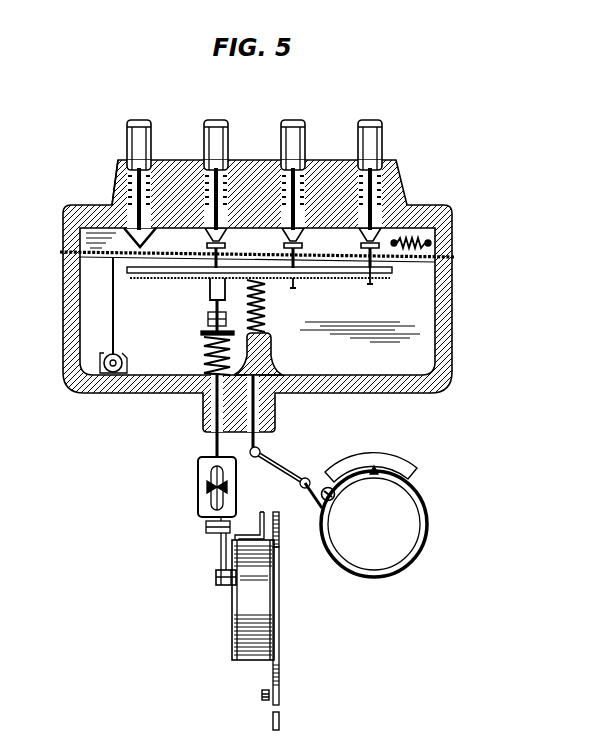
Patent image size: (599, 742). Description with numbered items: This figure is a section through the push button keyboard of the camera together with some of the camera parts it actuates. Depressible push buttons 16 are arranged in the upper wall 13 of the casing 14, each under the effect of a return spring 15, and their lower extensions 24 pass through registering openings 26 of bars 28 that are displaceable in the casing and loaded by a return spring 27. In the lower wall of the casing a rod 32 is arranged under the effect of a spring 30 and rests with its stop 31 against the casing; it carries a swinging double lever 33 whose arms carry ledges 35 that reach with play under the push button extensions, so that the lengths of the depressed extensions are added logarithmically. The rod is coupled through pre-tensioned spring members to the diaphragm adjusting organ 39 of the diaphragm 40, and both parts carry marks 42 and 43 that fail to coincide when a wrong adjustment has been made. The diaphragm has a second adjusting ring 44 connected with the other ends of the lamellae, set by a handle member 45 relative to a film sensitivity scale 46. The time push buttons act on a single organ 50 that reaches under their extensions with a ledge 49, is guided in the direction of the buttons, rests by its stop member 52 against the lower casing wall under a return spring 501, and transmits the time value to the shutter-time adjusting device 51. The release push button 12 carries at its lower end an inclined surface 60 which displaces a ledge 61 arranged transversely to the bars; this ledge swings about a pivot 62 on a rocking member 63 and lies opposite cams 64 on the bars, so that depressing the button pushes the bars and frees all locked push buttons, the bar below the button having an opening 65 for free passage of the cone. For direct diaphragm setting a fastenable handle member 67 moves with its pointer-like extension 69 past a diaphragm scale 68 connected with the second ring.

The push button 12 is at (127, 138).
The upper wall 13 is at (113, 203).
The casing 14 is at (440, 312).
The return spring 15 is at (126, 186).
The push button 16 is at (229, 141).
The extension 24 is at (210, 284).
The opening 26 is at (238, 249).
The return spring 27 is at (410, 240).
The bar 28 is at (440, 266).
The spring 30 is at (203, 344).
The stop 31 is at (210, 434).
The rod 32 is at (205, 358).
The swinging double lever 33 is at (207, 308).
The ledge 35 is at (347, 282).
The diaphragm adjusting organ 39 is at (220, 585).
The diaphragm 40 is at (235, 632).
The mark 42 is at (236, 490).
The mark 43 is at (205, 497).
The second adjusting ring 44 is at (280, 611).
The handle member 45 is at (262, 695).
The scale 46 is at (280, 722).
The ledge 49 is at (314, 279).
The organ 50 is at (275, 360).
The return spring 501 is at (268, 330).
The shutter-time adjusting device 51 is at (329, 486).
The stop member 52 is at (262, 450).
The inclined surface 60 is at (157, 240).
The ledge 61 is at (68, 232).
The pivot 62 is at (124, 362).
The rocking member 63 is at (115, 320).
The cam 64 is at (93, 260).
The opening 65 is at (155, 262).
The handle member 67 is at (247, 537).
The diaphragm scale 68 is at (279, 527).
The pointer-like extension 69 is at (264, 512).